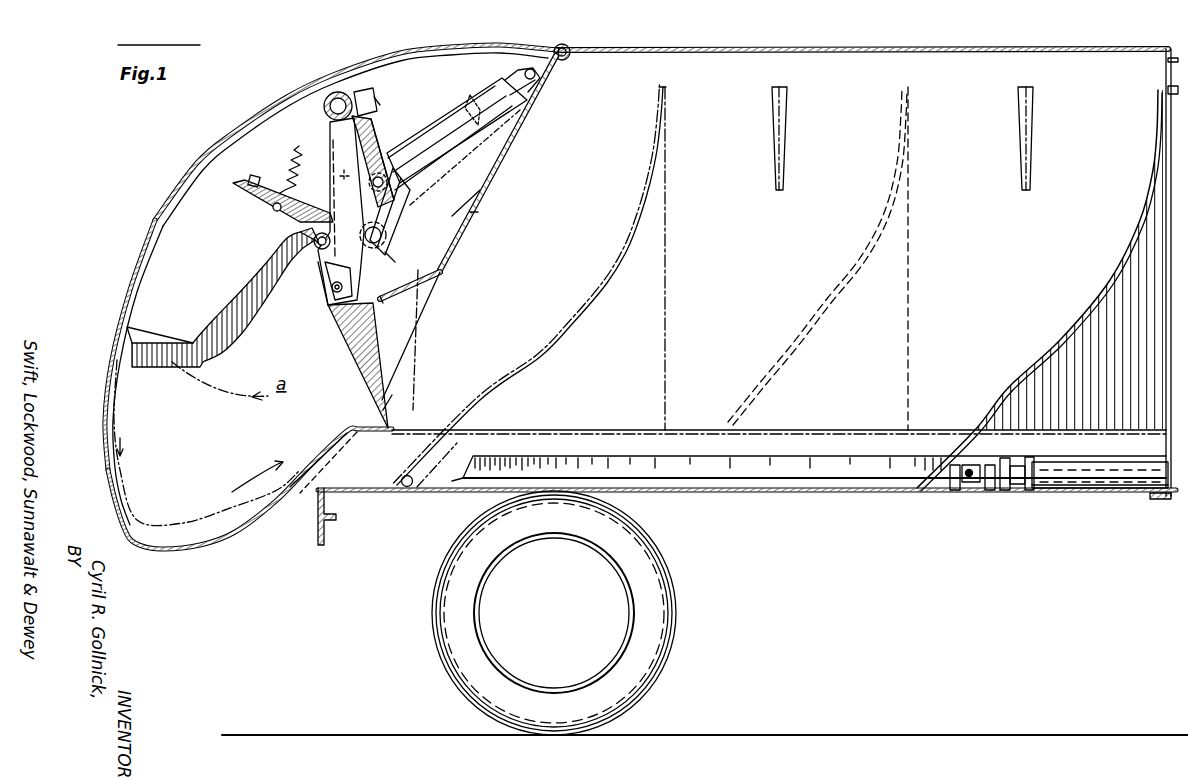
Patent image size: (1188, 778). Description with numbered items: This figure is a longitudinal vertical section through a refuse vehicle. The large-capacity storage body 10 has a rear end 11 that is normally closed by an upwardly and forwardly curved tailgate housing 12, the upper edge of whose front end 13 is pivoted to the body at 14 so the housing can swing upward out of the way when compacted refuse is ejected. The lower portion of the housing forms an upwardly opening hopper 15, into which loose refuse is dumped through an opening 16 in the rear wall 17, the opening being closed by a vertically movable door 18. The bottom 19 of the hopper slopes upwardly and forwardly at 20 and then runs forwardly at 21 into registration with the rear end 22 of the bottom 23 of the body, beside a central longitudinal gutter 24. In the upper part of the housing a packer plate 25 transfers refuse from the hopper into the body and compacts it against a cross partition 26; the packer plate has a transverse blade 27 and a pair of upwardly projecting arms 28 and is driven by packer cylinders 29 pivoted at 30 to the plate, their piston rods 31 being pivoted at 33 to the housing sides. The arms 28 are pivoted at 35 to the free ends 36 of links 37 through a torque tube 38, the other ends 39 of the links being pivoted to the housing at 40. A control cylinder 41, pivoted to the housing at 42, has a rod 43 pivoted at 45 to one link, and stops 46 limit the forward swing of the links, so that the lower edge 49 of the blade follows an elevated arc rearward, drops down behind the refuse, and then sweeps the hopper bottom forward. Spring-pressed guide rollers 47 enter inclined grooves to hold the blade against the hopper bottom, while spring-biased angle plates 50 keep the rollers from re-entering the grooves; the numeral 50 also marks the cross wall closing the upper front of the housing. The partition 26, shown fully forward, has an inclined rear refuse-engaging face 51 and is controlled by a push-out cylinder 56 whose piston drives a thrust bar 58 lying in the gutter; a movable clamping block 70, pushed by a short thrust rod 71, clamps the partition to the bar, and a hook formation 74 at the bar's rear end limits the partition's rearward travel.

The storage body 10 is at (866, 48).
The rear end of body 11 is at (445, 280).
The tailgate housing 12 is at (286, 100).
The front end of housing 13 is at (452, 214).
The pivotal connection 14 is at (563, 44).
The hopper 15 is at (150, 492).
The opening 16 is at (176, 186).
The rear wall 17 is at (228, 134).
The door 18 is at (138, 242).
The hopper bottom 19 is at (220, 545).
The upwardly sloping portion 20 is at (278, 478).
The forwardly extending portion 21 is at (424, 420).
The rear end of bottom 22 is at (354, 496).
The bottom of body 23 is at (440, 428).
The gutter 24 is at (406, 487).
The packer plate 25 is at (325, 311).
The cross partition 26 is at (1104, 282).
The blade 27 is at (360, 372).
The upwardly projecting arms 28 is at (330, 132).
The hydraulic cylinders 29 is at (488, 92).
The pivotal connection 30 is at (324, 290).
The piston rods 31 is at (526, 92).
The pivotal connection 33 is at (548, 74).
The pivotal connection 35 is at (338, 96).
The free ends of links 36 is at (368, 118).
The links 37 is at (400, 58).
The torque tube 38 is at (347, 90).
The other ends of links 39 is at (410, 236).
The pivotal connection 40 is at (396, 256).
The hydraulic cylinder 41 is at (490, 126).
The pivotal connection 42 is at (500, 116).
The piston rod 43 is at (452, 216).
The pivotal connection 45 is at (338, 177).
The stops 46 is at (368, 100).
The guide rollers 47 is at (292, 241).
The lower edge of blade 49 is at (385, 412).
The angle plates 50 is at (265, 212).
The rear refuse-engaging face 51 is at (1050, 352).
The hydraulic cylinder 56 is at (1106, 464).
The thrust bar 58 is at (607, 460).
The movable clamping block 70 is at (966, 466).
The thrust rod 71 is at (968, 482).
The hook formation 74 is at (498, 470).